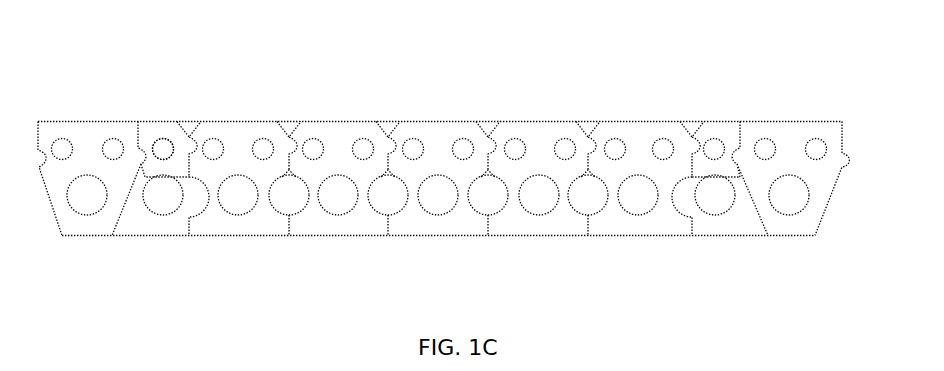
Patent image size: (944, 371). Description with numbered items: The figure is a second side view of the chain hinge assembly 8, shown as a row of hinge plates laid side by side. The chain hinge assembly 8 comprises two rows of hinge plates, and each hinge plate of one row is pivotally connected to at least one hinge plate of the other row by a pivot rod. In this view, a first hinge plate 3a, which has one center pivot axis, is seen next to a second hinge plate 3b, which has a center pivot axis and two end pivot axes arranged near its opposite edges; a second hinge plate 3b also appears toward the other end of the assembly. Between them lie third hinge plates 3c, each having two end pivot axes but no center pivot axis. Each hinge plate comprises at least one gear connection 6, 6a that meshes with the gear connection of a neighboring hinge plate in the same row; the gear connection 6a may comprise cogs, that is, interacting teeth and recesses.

The chain hinge assembly 8 is at (443, 158).
The first hinge plate 3a is at (158, 135).
The second hinge plate 3b is at (160, 232).
The third hinge plate 3c is at (83, 143).
The gear connection 6 is at (742, 160).
The gear connection 6a is at (842, 160).